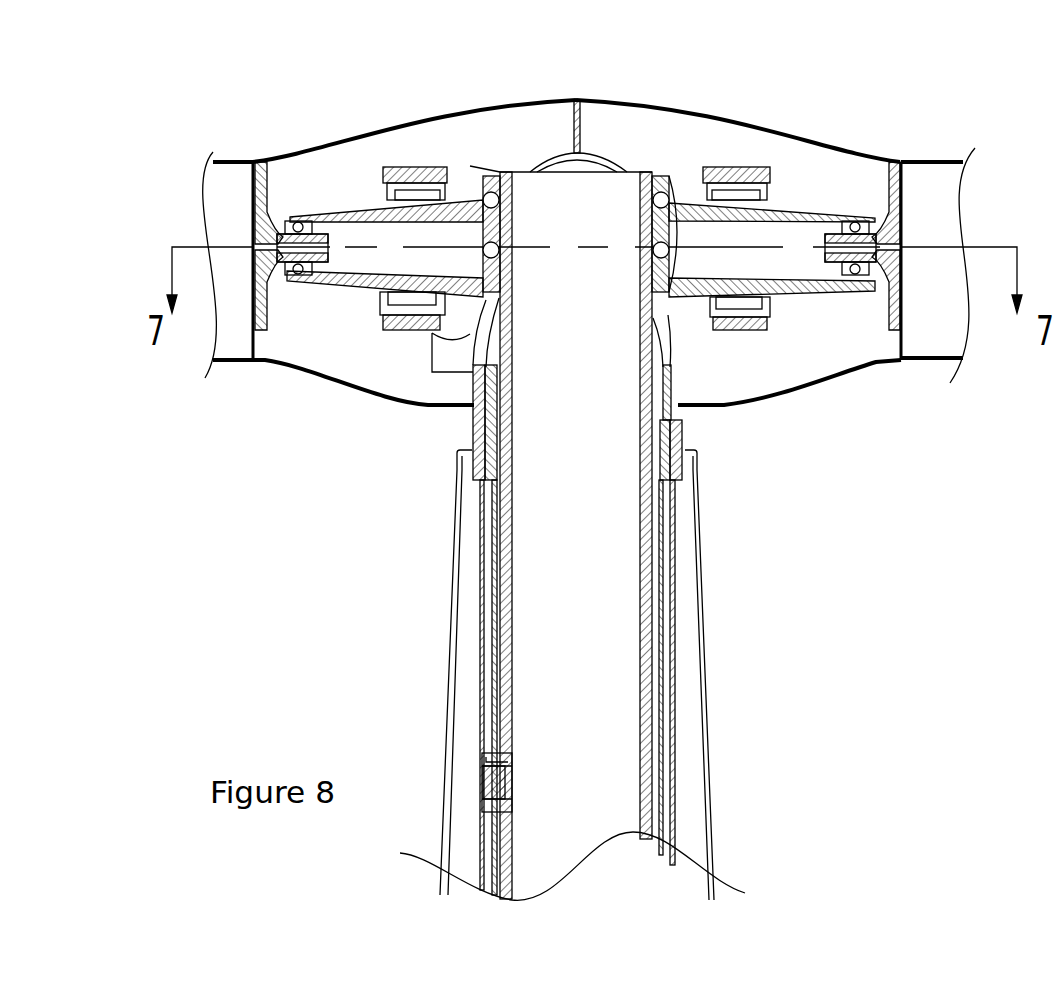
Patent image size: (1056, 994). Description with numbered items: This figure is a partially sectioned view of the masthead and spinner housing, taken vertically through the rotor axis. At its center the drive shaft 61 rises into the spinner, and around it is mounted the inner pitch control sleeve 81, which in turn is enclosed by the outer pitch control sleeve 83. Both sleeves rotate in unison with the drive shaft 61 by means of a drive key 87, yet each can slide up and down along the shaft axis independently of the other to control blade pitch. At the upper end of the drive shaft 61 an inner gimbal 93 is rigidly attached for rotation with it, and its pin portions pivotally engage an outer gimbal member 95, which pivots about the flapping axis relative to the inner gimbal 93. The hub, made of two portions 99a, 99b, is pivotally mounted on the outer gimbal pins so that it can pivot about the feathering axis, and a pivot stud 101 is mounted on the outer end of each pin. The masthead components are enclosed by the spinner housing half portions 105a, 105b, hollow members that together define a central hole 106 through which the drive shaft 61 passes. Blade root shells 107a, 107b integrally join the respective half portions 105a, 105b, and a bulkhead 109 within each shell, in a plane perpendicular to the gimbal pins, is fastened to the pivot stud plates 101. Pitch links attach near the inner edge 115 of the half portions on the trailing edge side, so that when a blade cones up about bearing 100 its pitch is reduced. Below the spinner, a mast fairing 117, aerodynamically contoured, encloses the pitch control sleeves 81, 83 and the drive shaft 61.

The drive shaft 61 is at (648, 810).
The inner pitch control sleeve 81 is at (663, 755).
The outer pitch control sleeve 83 is at (675, 673).
The drive key 87 is at (480, 780).
The inner gimbal 93 is at (667, 180).
The outer gimbal member 95 is at (812, 213).
The hub portion 99a is at (437, 167).
The hub portion 99b is at (770, 167).
The bearing 100 is at (302, 270).
The pivot stud 101 is at (263, 187).
The spinner housing half portion 105a is at (353, 133).
The spinner housing half portion 105b is at (635, 103).
The central hole 106 is at (705, 408).
The blade root shell 107a is at (233, 157).
The blade root shell portion 107b is at (937, 162).
The bulkhead 109 is at (252, 348).
The inner edge 115 is at (577, 103).
The mast fairing 117 is at (702, 516).